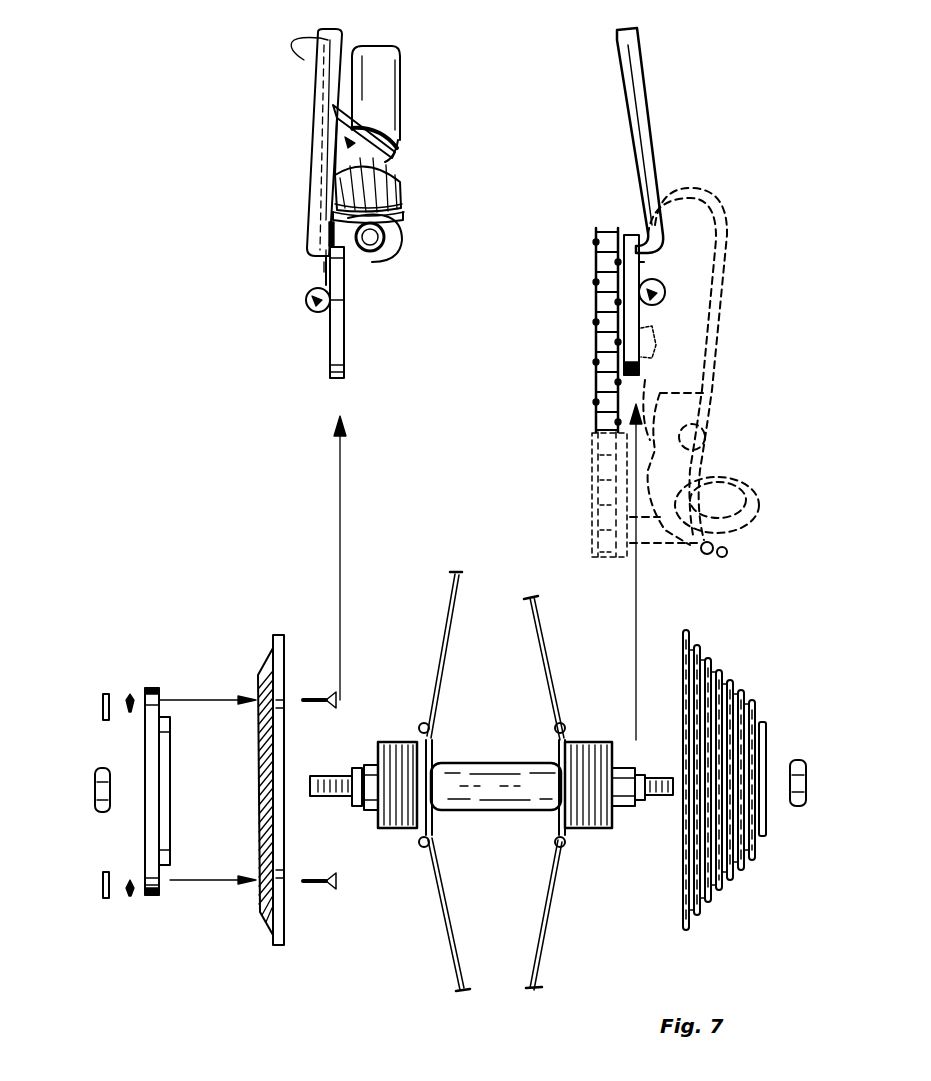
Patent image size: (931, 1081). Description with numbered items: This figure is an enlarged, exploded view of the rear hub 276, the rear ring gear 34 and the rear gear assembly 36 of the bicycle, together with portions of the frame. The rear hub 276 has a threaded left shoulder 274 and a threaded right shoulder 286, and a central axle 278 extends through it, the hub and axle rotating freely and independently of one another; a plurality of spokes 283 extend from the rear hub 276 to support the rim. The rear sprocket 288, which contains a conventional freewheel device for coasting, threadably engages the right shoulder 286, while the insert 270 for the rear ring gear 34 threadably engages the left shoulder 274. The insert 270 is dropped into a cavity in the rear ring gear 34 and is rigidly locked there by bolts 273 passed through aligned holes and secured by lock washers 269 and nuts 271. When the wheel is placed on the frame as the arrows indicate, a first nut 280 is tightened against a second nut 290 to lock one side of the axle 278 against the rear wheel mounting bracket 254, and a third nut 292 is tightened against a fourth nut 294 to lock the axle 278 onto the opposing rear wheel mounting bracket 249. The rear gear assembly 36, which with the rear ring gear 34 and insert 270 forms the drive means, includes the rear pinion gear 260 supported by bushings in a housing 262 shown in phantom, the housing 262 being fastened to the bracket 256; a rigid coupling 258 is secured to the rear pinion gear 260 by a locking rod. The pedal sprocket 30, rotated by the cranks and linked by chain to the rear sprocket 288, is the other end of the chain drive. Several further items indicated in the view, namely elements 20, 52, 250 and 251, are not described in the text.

The rear derailleur 20 is at (740, 426).
The pedal sprocket 30 is at (585, 262).
The rear ring gear 34 is at (272, 905).
The rear gear assembly 36 is at (260, 204).
The hydraulic cylinder 52 is at (385, 95).
The opposing rear wheel mounting bracket 249 is at (633, 262).
The frame tube 250 is at (304, 60).
The ball 251 is at (305, 303).
The rear wheel mounting bracket 254 is at (345, 355).
The bracket 256 is at (326, 268).
The rigid coupling 258 is at (384, 242).
The rear pinion gear 260 is at (395, 195).
The housing 262 is at (390, 152).
The lock washers 269 is at (128, 700).
The insert 270 is at (158, 892).
The nuts 271 is at (103, 704).
The bolts 273 is at (318, 697).
The threaded left shoulder 274 is at (395, 742).
The rear hub 276 is at (480, 770).
The axle 278 is at (332, 800).
The first nut 280 is at (96, 778).
The spokes 283 is at (538, 898).
The threaded right shoulder 286 is at (596, 742).
The rear sprocket 288 is at (773, 700).
The second nut 290 is at (364, 768).
The third nut 292 is at (806, 776).
The fourth nut 294 is at (620, 810).